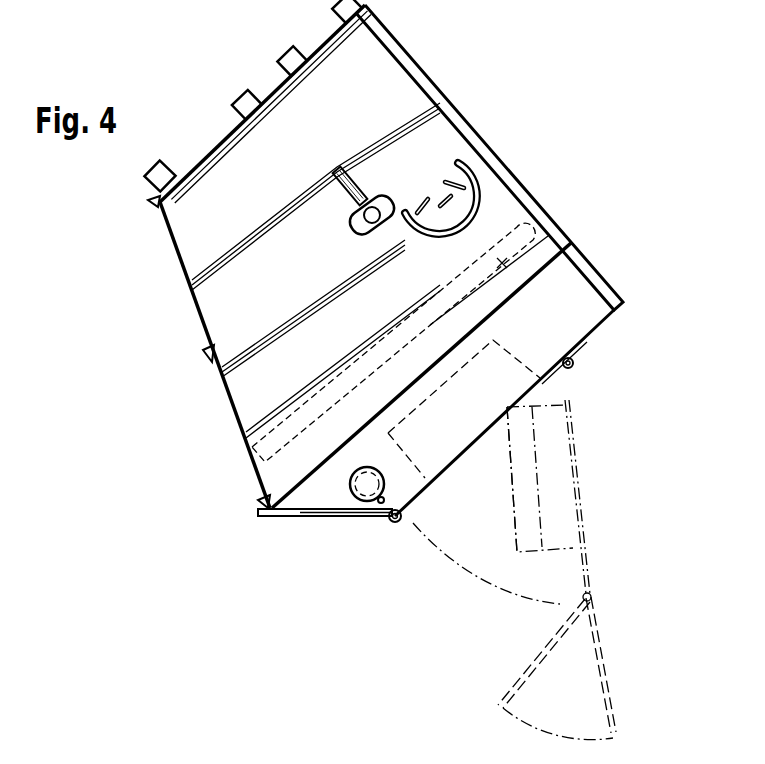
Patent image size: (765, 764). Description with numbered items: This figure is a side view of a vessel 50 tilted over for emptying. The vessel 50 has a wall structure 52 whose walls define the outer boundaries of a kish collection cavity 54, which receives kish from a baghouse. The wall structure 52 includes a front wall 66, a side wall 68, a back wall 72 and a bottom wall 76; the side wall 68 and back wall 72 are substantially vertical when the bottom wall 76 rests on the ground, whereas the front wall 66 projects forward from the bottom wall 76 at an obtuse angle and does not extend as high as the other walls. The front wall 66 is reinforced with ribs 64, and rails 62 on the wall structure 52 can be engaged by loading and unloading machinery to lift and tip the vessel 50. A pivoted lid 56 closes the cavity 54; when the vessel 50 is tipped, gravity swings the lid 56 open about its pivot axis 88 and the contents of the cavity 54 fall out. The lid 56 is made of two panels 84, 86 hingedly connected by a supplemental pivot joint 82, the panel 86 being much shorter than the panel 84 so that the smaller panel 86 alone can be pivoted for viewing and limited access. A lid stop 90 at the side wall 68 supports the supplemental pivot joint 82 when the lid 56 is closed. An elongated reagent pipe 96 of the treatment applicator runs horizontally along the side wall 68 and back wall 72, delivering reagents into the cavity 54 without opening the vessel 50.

The vessel 50 is at (204, 433).
The wall structure 52 is at (507, 130).
The kish collection cavity 54 is at (288, 526).
The pivoted lid 56 is at (452, 486).
The rails 62 is at (473, 210).
The ribs 64 is at (153, 201).
The front wall 66 is at (190, 277).
The side wall 68 is at (367, 80).
The back wall 72 is at (557, 222).
The bottom wall 76 is at (207, 148).
The supplemental pivot joint 82 is at (395, 523).
The panel 84 is at (563, 400).
The panel 86 is at (340, 518).
The pivot axis 88 is at (576, 368).
The lid stop 90 is at (366, 468).
The reagent pipe 96 is at (538, 281).